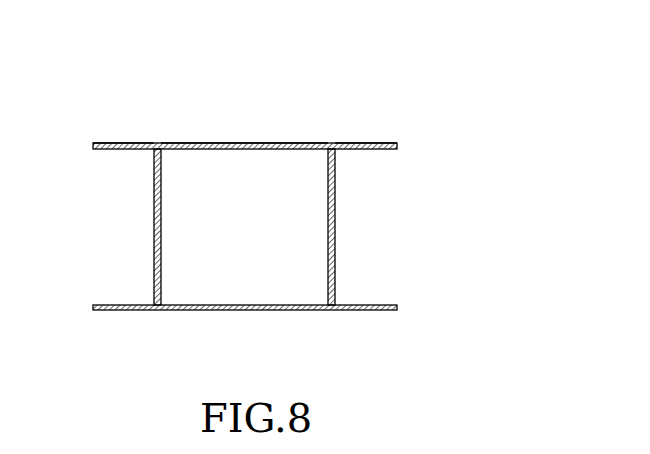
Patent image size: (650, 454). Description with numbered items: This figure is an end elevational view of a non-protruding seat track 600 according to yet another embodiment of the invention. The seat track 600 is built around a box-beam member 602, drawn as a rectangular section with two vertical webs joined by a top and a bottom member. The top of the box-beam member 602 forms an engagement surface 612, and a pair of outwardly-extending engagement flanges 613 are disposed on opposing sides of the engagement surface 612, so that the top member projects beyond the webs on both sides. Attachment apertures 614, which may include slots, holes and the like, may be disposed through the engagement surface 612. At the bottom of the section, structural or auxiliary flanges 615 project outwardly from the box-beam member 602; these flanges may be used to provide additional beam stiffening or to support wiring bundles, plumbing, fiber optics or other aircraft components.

The non-protruding seat track 600 is at (420, 63).
The box-beam member 602 is at (335, 226).
The engagement surface 612 is at (195, 143).
The outwardly-extending engagement flanges 613 is at (138, 143).
The attachment apertures 614 is at (250, 143).
The structural or auxiliary flanges 615 is at (122, 310).